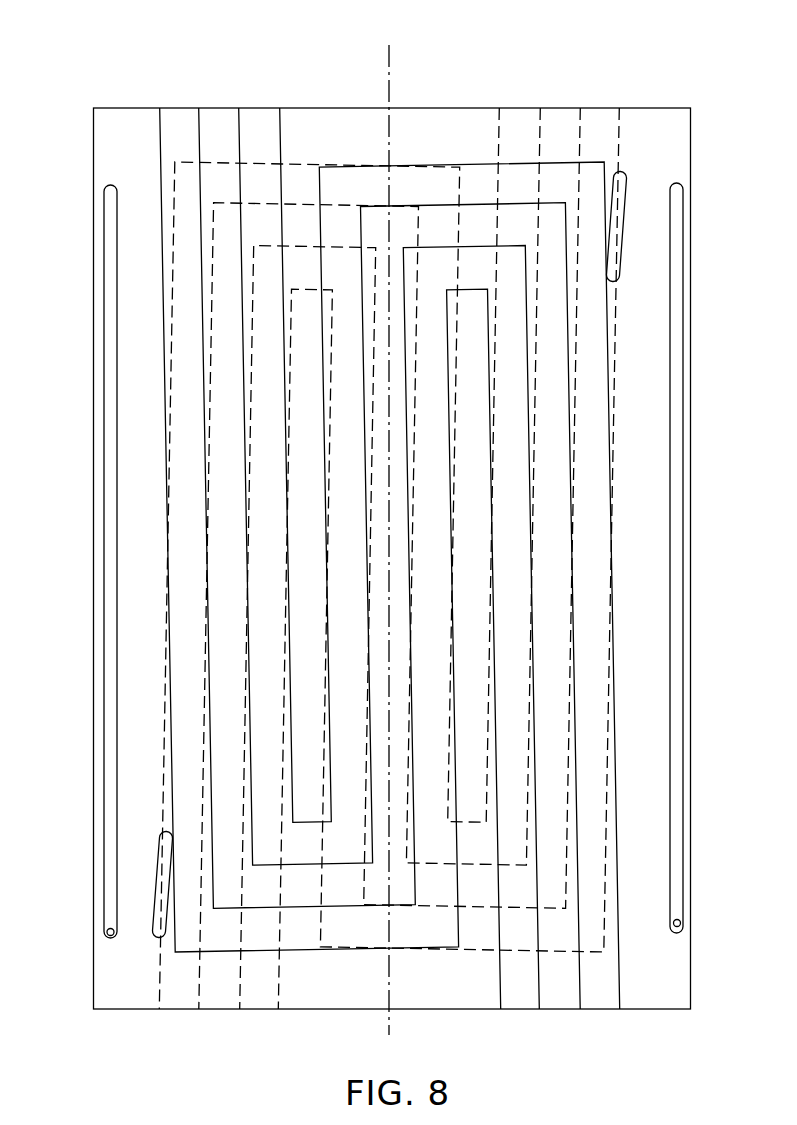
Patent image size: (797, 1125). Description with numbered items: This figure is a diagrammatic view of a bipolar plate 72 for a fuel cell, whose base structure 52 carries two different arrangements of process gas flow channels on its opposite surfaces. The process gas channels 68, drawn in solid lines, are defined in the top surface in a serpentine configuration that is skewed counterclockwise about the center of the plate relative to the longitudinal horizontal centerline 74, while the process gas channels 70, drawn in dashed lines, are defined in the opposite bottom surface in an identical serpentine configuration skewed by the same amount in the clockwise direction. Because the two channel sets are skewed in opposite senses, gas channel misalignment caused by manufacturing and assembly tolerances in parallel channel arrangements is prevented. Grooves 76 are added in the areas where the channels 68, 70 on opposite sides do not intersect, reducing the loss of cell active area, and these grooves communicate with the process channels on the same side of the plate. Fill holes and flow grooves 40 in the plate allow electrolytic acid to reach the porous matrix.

The fill holes and flow grooves 40 is at (108, 672).
The base structure 52 is at (692, 543).
The process gas channels 68 is at (242, 260).
The process gas channels 70 is at (252, 335).
The bipolar plate 72 is at (633, 88).
The longitudinal horizontal centerline 74 is at (389, 72).
The grooves 76 is at (615, 232).